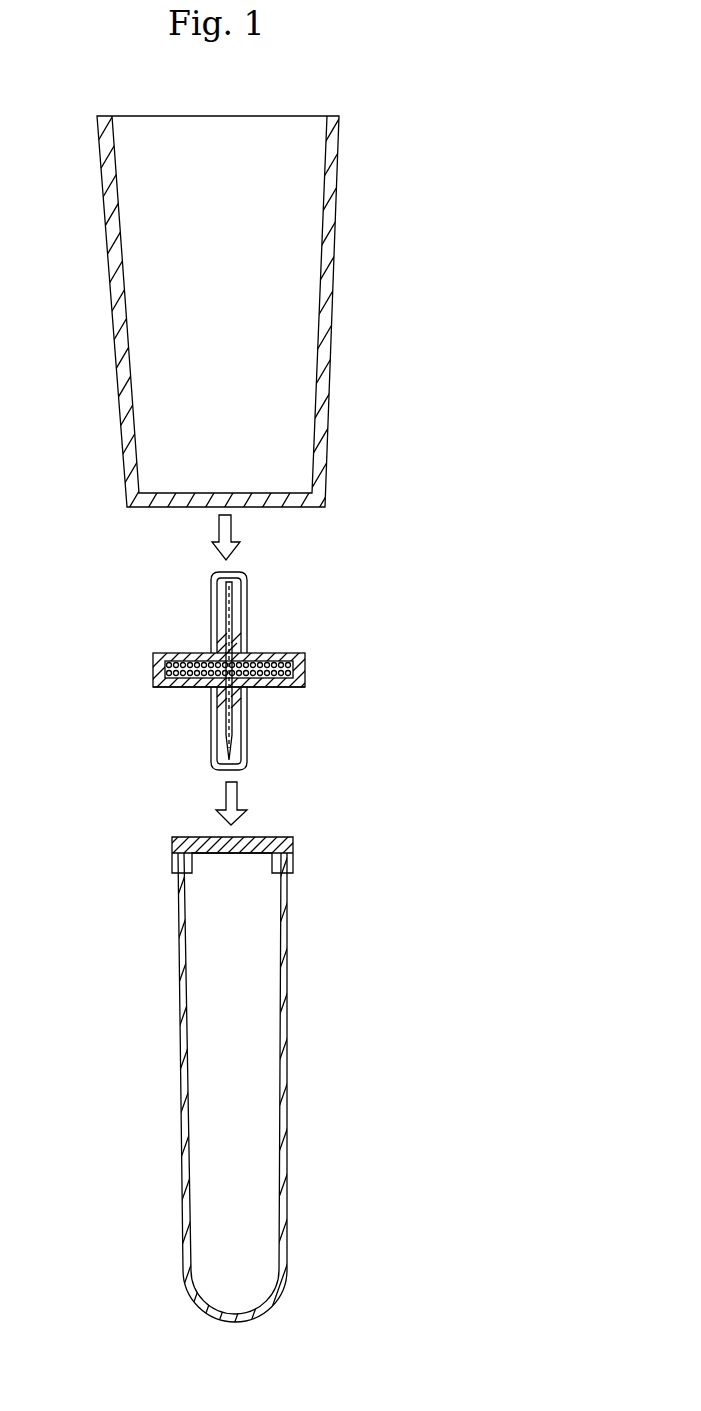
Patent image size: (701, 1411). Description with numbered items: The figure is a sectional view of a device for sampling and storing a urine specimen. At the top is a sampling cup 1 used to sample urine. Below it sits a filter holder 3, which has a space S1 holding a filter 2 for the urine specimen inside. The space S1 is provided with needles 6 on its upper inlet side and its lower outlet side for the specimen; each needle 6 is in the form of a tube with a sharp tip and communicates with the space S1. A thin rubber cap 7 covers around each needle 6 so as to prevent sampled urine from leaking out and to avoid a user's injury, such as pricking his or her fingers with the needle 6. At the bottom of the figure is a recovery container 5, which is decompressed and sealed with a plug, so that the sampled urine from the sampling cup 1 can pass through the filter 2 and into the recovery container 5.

The sampling cup 1 is at (341, 288).
The filter 2 is at (270, 655).
The filter holder 3 is at (312, 668).
The recovery container 5 is at (292, 989).
The needle 6 is at (220, 610).
The rubber cap 7 is at (242, 573).
The space S1 is at (178, 688).